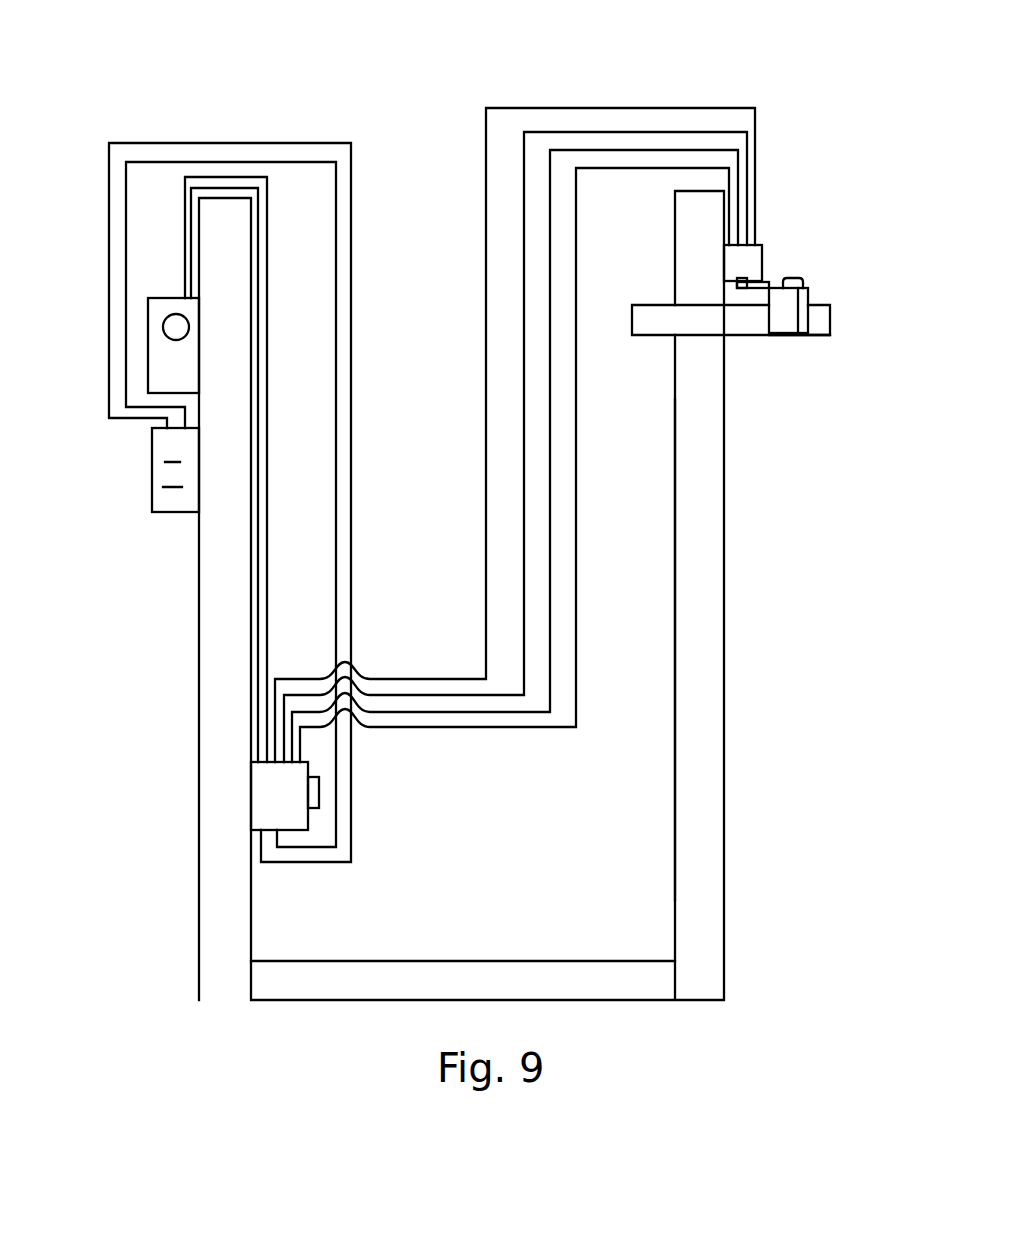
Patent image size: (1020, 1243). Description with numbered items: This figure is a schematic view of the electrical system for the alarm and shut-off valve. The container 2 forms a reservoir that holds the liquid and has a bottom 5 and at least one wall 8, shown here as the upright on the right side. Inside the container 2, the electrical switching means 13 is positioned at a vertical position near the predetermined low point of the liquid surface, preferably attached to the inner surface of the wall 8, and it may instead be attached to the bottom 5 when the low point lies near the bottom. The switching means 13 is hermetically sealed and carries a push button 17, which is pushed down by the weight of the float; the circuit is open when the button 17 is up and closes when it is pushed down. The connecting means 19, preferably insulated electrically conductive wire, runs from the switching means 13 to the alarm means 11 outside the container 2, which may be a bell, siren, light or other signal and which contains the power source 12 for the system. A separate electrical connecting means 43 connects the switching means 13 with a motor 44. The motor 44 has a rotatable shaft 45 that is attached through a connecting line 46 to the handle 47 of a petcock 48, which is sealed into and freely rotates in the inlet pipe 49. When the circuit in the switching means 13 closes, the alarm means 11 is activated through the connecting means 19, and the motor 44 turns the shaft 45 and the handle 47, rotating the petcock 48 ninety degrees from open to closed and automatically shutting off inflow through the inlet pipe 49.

The container 2 is at (740, 777).
The bottom 5 is at (630, 963).
The wall 8 is at (707, 892).
The alarm means 11 is at (170, 355).
The power source 12 is at (150, 470).
The electrical switching means 13 is at (263, 782).
The push button 17 is at (312, 797).
The connecting means 19 is at (180, 237).
The electrical connecting means 43 is at (565, 102).
The motor 44 is at (752, 257).
The rotatable shaft 45 is at (748, 283).
The connecting line 46 is at (772, 337).
The handle 47 is at (807, 283).
The petcock 48 is at (807, 322).
The inlet pipe 49 is at (812, 337).